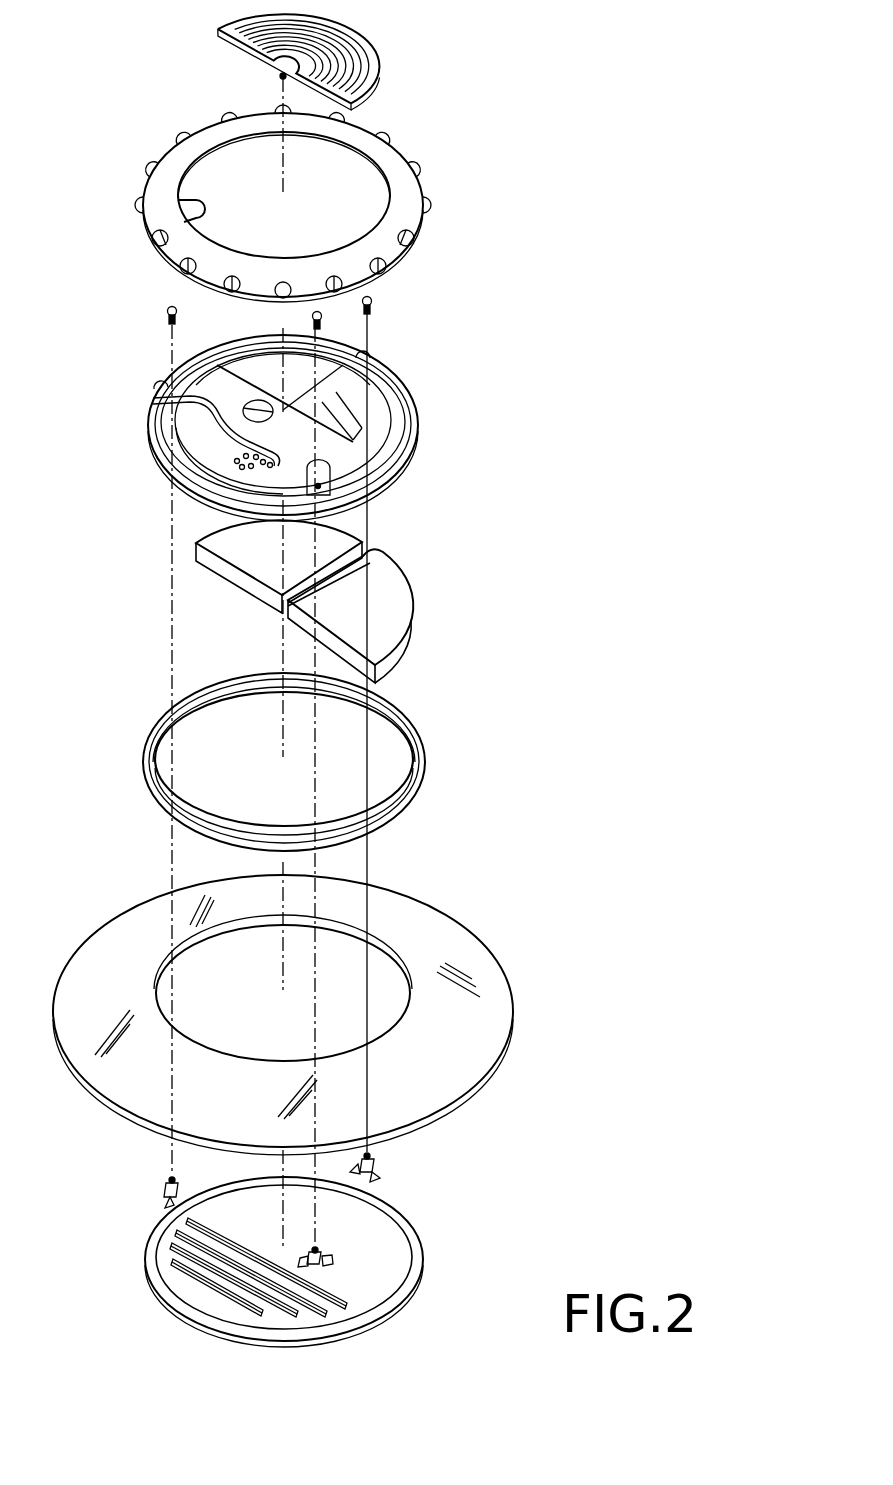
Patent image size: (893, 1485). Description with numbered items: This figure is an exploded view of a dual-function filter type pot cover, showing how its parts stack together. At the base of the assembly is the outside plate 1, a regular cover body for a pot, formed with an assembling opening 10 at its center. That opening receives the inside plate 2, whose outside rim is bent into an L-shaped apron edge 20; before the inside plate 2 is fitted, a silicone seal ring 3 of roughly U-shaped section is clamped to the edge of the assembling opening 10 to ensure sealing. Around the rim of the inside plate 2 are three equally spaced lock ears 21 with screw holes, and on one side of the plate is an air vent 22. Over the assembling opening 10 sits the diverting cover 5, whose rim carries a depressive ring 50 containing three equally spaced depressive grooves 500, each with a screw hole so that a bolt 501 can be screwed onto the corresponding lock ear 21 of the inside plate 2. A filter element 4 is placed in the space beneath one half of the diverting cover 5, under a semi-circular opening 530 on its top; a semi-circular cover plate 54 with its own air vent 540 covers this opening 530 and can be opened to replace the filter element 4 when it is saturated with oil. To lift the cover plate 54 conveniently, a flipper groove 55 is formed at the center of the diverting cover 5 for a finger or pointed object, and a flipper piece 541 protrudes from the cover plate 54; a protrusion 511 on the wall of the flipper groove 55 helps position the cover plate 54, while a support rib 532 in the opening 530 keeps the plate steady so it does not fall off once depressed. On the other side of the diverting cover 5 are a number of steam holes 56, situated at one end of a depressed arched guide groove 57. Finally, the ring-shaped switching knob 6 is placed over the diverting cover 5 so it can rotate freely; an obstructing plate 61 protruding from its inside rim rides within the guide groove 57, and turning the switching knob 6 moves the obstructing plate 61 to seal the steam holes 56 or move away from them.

The outside plate 1 is at (500, 1007).
The assembling opening 10 is at (220, 997).
The inside plate 2 is at (388, 1248).
The L-shaped apron edge 20 is at (158, 1247).
The lock ears 21 is at (370, 1157).
The air vent 22 is at (227, 1280).
The silicone seal ring 3 is at (424, 765).
The filter element 4 is at (392, 597).
The diverting cover 5 is at (420, 408).
The depressive ring 50 is at (163, 460).
The depressive grooves 500 is at (165, 383).
The bolt 501 is at (167, 312).
The protrusion 511 is at (212, 423).
The semi-circular opening 530 is at (358, 407).
The support rib 532 is at (330, 407).
The semi-circular cover plate 54 is at (363, 38).
The air vent 540 is at (363, 65).
The flipper piece 541 is at (275, 68).
The flipper groove 55 is at (255, 410).
The steam holes 56 is at (250, 462).
The arched guide groove 57 is at (218, 450).
The switching knob 6 is at (413, 180).
The obstructing plate 61 is at (193, 211).